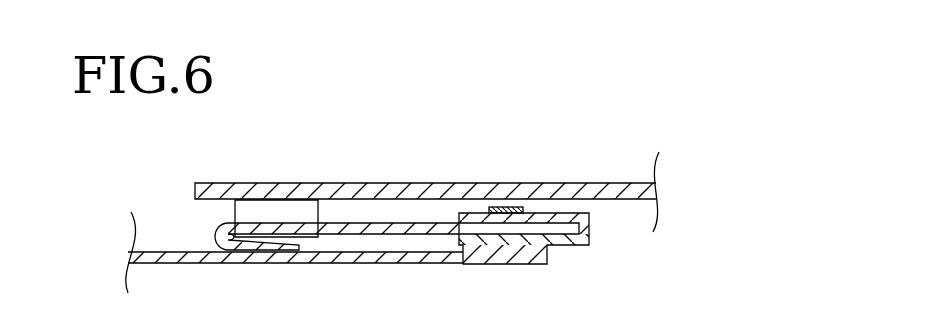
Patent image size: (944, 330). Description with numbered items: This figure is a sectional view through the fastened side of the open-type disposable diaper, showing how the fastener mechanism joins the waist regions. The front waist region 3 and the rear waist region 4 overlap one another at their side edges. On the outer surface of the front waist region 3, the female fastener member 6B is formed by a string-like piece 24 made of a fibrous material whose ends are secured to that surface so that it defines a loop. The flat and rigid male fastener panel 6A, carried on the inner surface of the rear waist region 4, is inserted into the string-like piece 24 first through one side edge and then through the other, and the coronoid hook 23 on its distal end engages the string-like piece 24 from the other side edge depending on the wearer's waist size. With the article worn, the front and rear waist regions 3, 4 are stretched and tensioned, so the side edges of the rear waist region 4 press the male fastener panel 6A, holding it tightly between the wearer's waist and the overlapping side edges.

The front waist region 3 is at (442, 197).
The rear waist region 4 is at (373, 263).
The male fastener panel 6A is at (587, 246).
The female fastener member 6B is at (226, 211).
The coronoid hook 23 is at (263, 246).
The string-like piece 24 is at (282, 210).